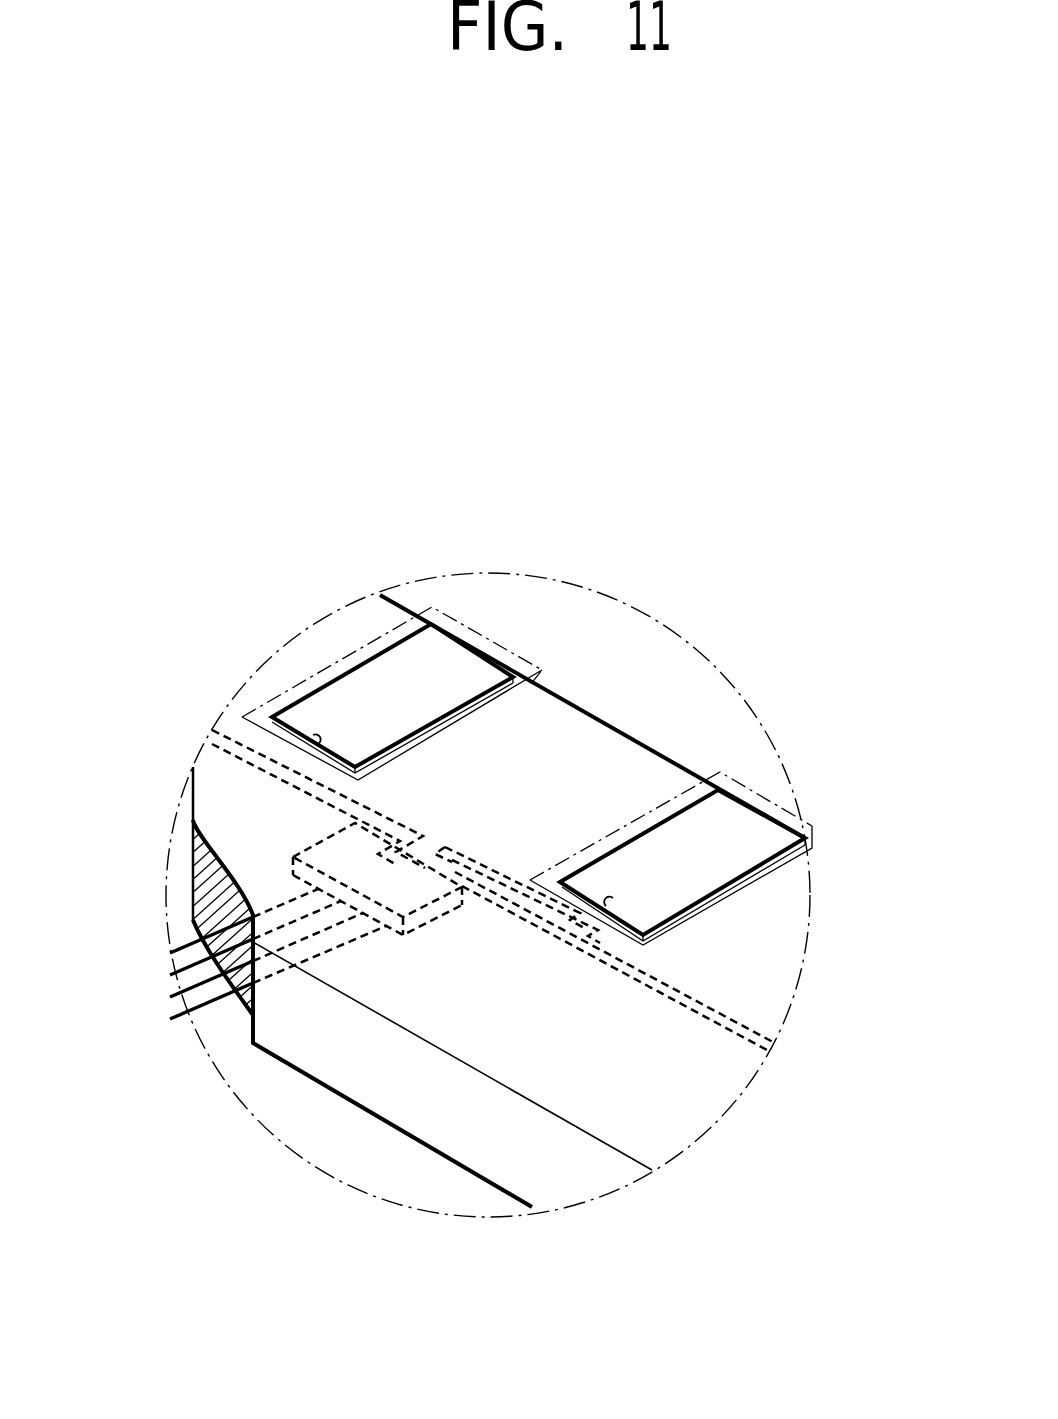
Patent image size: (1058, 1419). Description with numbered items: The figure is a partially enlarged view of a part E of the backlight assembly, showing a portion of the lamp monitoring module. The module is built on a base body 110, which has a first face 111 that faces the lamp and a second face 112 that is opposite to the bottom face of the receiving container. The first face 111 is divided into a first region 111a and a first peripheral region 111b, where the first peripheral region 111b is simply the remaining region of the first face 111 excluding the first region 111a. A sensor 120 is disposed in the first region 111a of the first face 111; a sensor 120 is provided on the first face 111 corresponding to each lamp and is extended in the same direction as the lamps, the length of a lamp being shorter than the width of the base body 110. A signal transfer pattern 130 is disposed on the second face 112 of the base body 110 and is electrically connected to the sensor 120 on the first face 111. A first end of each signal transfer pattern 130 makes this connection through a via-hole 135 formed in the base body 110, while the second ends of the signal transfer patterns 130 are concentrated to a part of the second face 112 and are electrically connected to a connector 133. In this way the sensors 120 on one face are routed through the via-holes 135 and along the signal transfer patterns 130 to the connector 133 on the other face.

The base body 110 is at (368, 1068).
The first face 111 is at (555, 729).
The first region 111a is at (364, 645).
The first peripheral region 111b is at (570, 780).
The second face 112 is at (177, 963).
The sensor 120 is at (767, 832).
The signal transfer pattern 130 is at (700, 1003).
The connector 133 is at (316, 850).
The via-hole 135 is at (612, 902).
The part E is at (467, 1215).